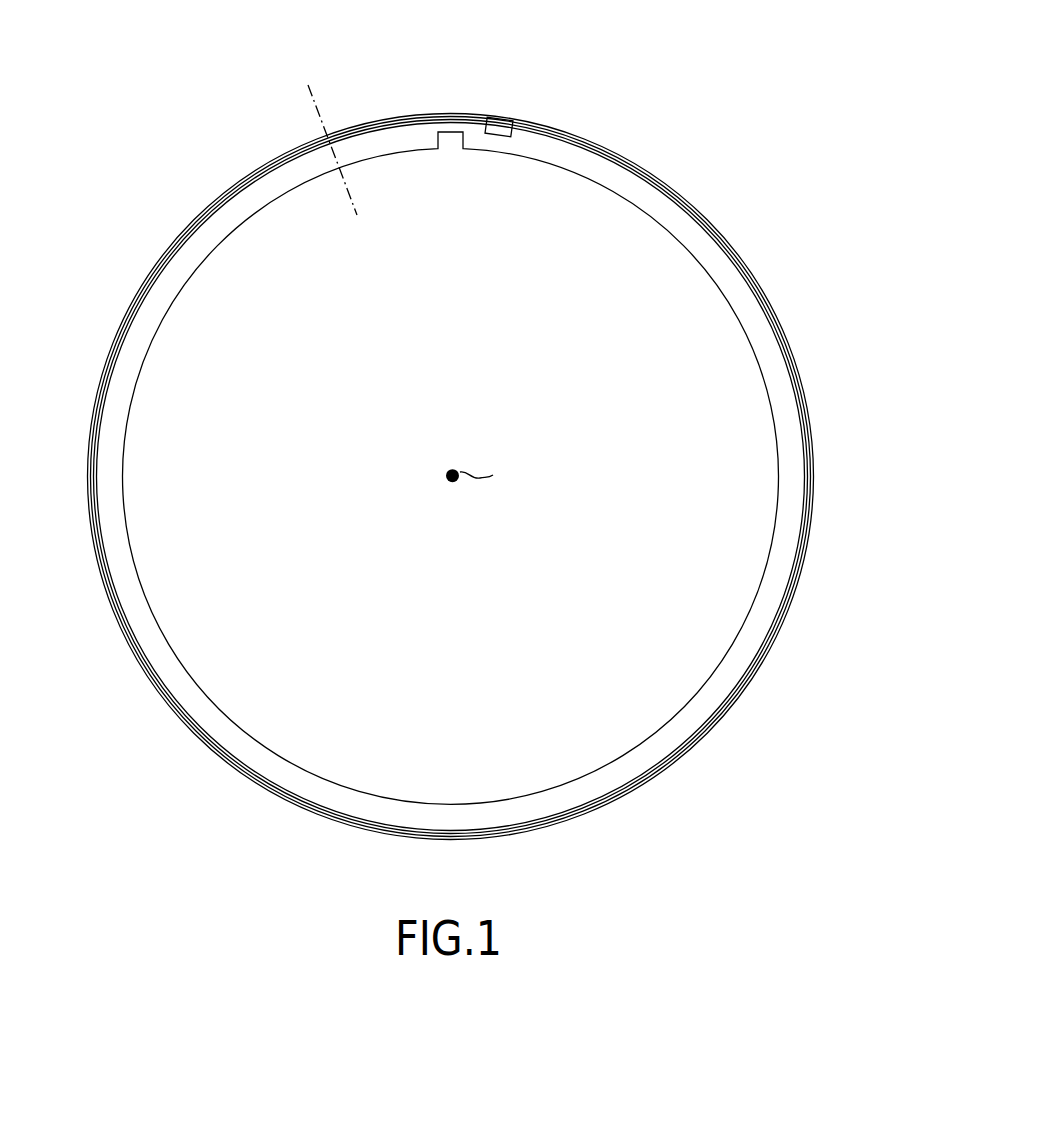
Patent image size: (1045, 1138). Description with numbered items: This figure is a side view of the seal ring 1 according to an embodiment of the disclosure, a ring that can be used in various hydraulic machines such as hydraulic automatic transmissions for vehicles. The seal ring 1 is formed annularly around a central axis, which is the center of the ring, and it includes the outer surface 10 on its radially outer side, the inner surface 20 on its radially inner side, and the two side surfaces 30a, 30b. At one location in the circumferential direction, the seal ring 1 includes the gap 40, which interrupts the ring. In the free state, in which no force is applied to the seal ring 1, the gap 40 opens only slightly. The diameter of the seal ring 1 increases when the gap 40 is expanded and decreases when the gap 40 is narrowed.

The seal ring 1 is at (684, 106).
The outer surface 10 is at (712, 222).
The inner surface 20 is at (703, 265).
The side surface 30a is at (748, 268).
The side surface 30b is at (777, 367).
The gap 40 is at (481, 99).